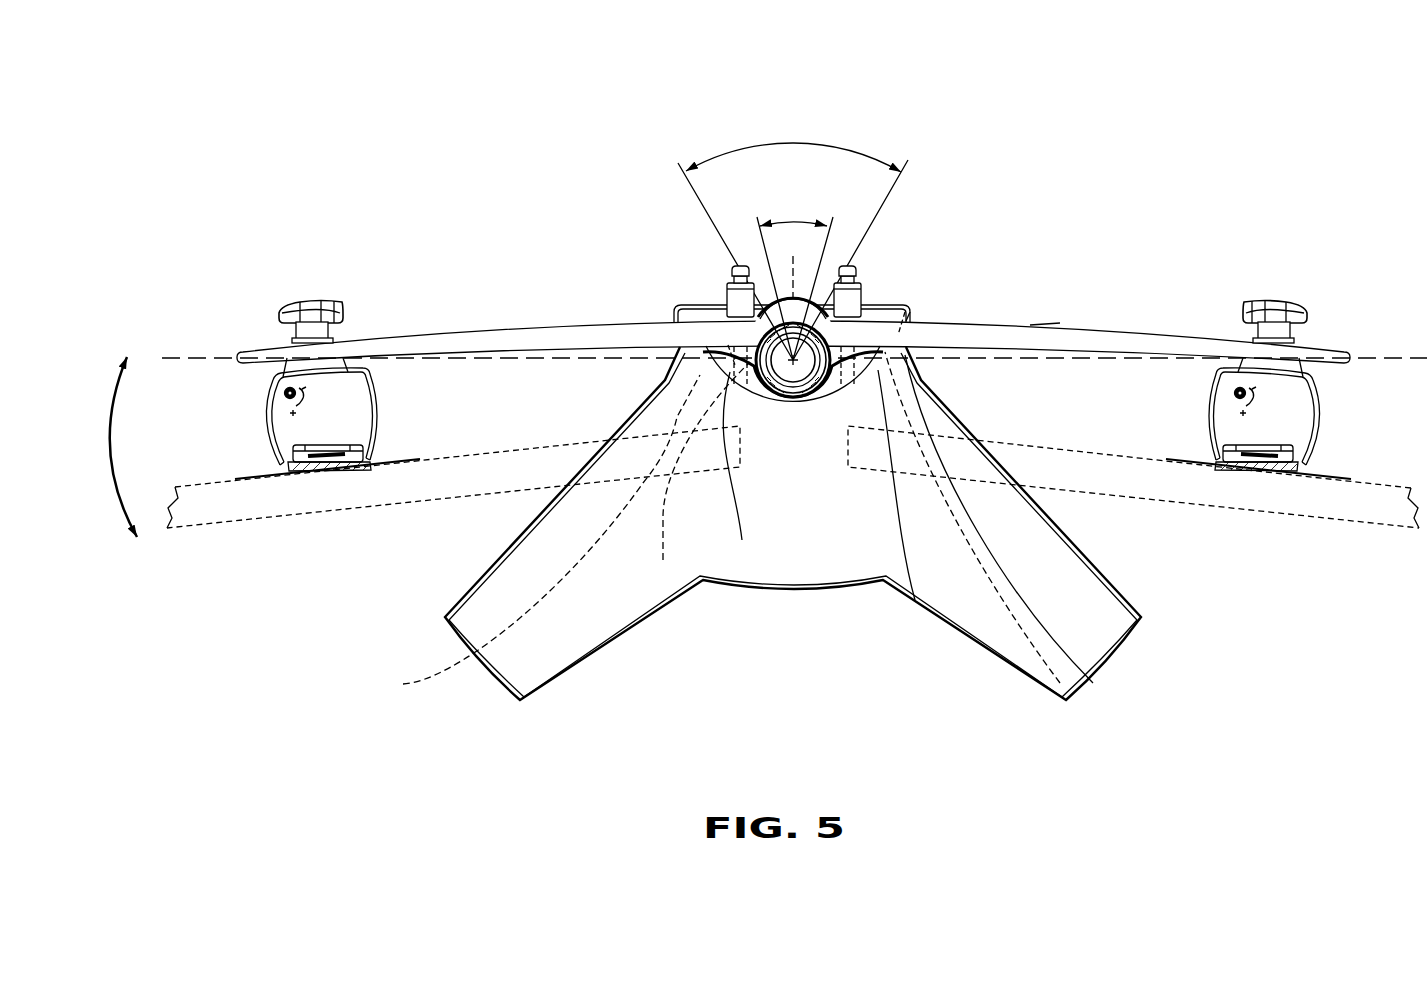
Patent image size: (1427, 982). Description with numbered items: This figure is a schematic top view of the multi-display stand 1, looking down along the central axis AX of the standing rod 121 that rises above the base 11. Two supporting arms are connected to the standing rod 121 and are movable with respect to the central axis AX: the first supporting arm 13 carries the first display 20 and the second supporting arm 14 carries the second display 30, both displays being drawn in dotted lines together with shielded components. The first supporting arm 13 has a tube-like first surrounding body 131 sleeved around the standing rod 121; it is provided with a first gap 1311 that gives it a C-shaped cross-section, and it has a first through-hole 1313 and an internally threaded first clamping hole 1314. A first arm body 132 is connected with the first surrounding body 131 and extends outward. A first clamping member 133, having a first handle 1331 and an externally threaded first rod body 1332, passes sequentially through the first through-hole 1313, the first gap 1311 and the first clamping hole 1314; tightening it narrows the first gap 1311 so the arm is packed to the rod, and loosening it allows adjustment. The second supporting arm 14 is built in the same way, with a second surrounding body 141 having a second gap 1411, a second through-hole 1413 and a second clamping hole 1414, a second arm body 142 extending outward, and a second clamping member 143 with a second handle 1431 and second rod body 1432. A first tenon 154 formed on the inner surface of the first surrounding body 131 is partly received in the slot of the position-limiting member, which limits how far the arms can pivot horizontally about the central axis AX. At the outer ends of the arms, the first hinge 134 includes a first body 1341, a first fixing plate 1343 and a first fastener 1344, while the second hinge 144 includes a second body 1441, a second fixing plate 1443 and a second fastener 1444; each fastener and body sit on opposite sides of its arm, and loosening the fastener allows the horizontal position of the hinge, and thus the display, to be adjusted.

The multi-display stand 1 is at (252, 142).
The base 11 is at (495, 705).
The pivot shaft 121 is at (793, 362).
The first supporting arm 13 is at (1190, 256).
The first surrounding body 131 is at (915, 600).
The first gap 1311 is at (1093, 683).
The first through-hole 1313 is at (873, 348).
The first clamping hole 1314 is at (1060, 683).
The first arm body 132 is at (1040, 316).
The first clamping member 133 is at (910, 272).
The first handle 1331 is at (852, 290).
The first rod body 1332 is at (907, 312).
The first hinge 134 is at (1316, 406).
The first body 1341 is at (1300, 410).
The first fixing plate 1343 is at (1332, 480).
The first fastener 1344 is at (1276, 305).
The second supporting arm 14 is at (453, 227).
The second surrounding body 141 is at (742, 540).
The second gap 1411 is at (526, 537).
The second through-hole 1413 is at (713, 348).
The second clamping hole 1414 is at (663, 560).
The second arm body 142 is at (445, 320).
The second clamping member 143 is at (682, 287).
The second handle 1431 is at (742, 290).
The second rod body 1432 is at (674, 315).
The second hinge 144 is at (246, 407).
The second body 1441 is at (285, 428).
The second fixing plate 1443 is at (255, 480).
The second fastener 1444 is at (310, 305).
The first tenon 154 is at (783, 300).
The first display 20 is at (1390, 528).
The second display 30 is at (205, 527).
The central axis AX is at (793, 362).